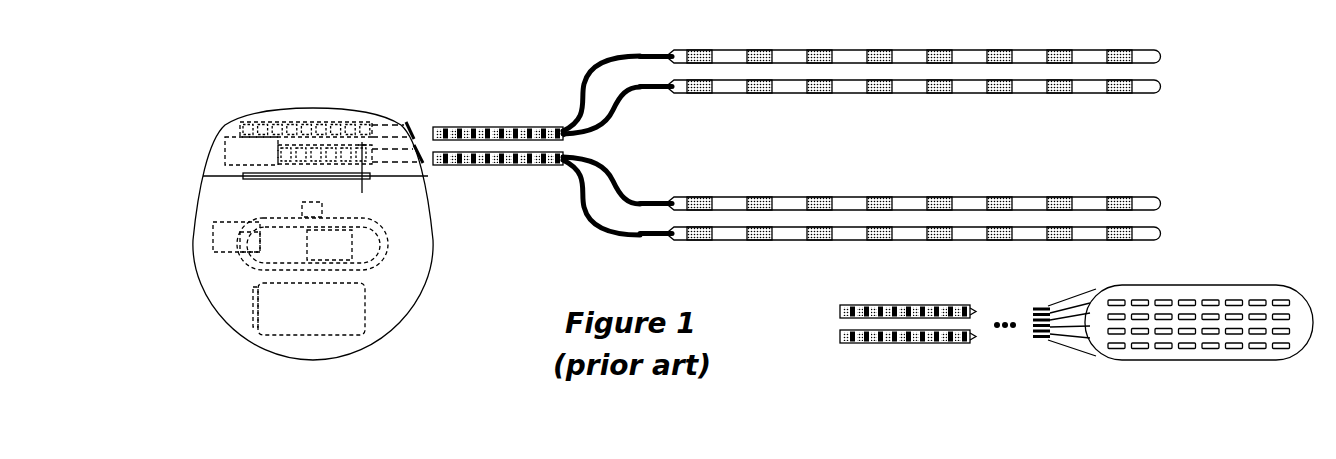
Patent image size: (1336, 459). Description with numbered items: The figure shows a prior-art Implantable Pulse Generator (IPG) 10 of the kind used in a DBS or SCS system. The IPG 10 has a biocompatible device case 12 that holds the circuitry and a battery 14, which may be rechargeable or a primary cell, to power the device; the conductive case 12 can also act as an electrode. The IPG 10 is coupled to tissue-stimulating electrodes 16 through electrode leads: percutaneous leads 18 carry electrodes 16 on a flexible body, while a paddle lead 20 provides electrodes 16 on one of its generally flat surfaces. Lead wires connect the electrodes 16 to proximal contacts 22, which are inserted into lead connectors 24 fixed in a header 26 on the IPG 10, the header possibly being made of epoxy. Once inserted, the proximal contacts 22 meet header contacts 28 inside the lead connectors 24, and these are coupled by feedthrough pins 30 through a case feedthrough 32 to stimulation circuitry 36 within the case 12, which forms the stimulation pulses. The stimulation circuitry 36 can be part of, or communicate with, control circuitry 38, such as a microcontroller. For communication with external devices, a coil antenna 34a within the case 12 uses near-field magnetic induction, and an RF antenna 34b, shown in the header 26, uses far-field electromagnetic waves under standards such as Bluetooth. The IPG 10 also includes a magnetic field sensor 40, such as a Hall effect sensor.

The implantable pulse generator 10 is at (268, 70).
The device case 12 is at (428, 270).
The battery 14 is at (326, 320).
The electrodes 16 is at (826, 50).
The percutaneous leads 18 is at (1170, 88).
The paddle lead 20 is at (1165, 285).
The proximal contacts 22 is at (505, 105).
The lead connectors 24 is at (431, 180).
The header 26 is at (343, 111).
The header contacts 28 is at (256, 129).
The feedthrough pins 30 is at (362, 193).
The case feedthrough 32 is at (253, 180).
The antenna 34a is at (387, 256).
The RF antenna 34b is at (229, 139).
The stimulation circuitry 36 is at (213, 232).
The control circuitry 38 is at (352, 241).
The magnetic field sensor 40 is at (302, 206).